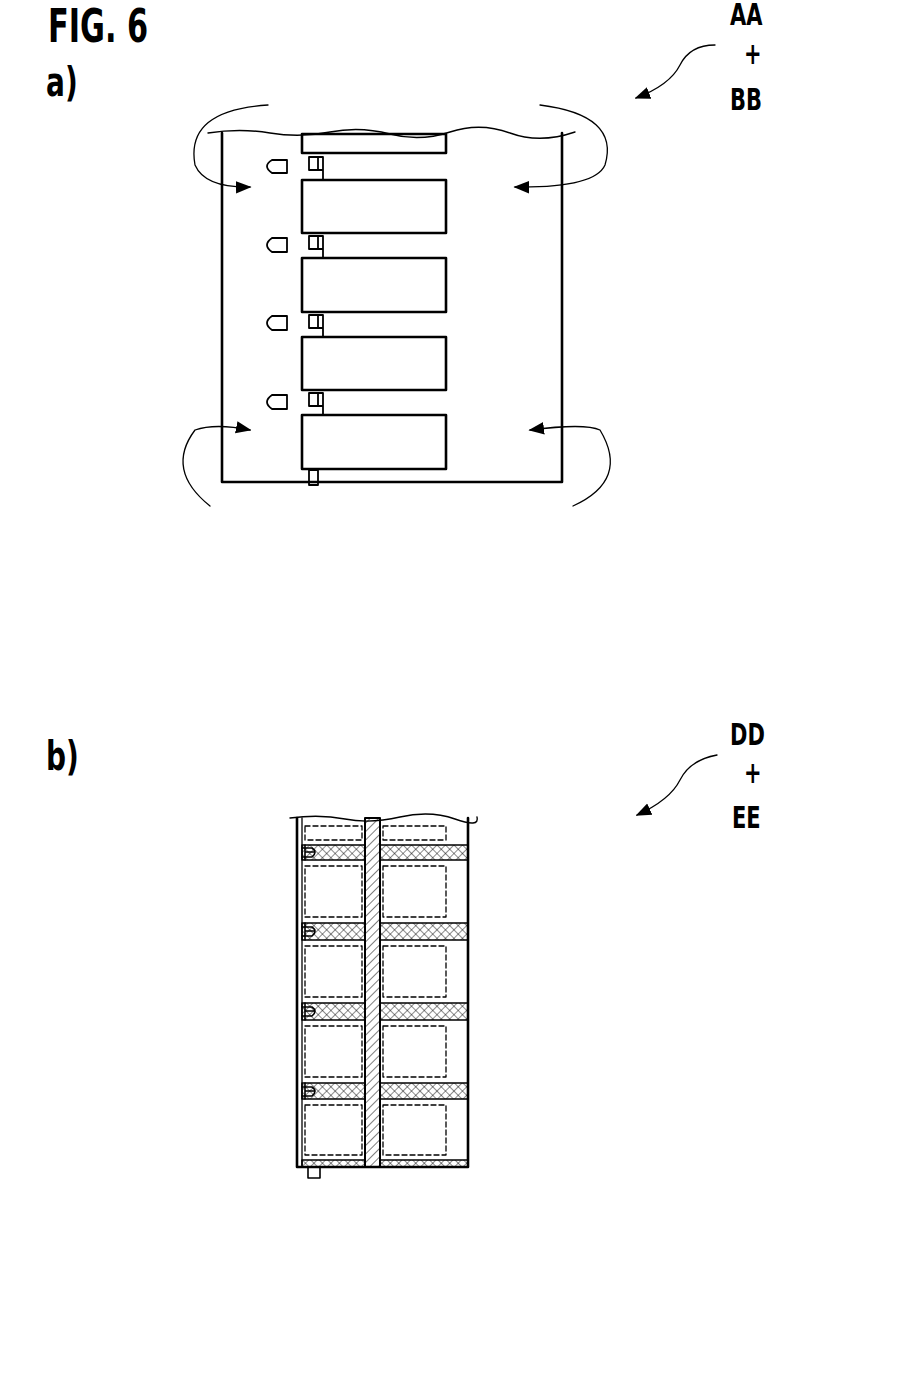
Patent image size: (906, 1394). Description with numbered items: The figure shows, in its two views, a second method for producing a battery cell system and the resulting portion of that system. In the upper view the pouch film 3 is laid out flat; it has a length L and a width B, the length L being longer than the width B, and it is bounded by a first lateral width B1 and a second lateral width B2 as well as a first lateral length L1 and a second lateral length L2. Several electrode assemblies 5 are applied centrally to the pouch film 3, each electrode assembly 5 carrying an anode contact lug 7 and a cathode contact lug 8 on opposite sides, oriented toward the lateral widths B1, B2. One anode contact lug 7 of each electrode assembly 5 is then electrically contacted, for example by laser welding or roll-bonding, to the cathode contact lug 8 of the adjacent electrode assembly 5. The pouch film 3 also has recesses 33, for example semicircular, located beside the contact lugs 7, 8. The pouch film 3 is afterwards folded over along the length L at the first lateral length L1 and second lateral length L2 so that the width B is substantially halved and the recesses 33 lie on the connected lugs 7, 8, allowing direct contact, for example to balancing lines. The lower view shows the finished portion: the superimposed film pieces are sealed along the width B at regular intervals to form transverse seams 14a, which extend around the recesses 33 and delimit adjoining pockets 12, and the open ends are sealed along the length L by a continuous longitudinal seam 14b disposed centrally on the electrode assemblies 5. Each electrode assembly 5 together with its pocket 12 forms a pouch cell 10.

The pouch film 3 is at (258, 150).
The electrode assembly 5 is at (420, 192).
The anode contact lug 7 is at (308, 240).
The cathode contact lug 8 is at (315, 168).
The pouch cell 10 is at (290, 1040).
The pocket 12 is at (423, 882).
The transverse seam 14a is at (468, 1007).
The longitudinal seam 14b is at (372, 830).
The recess 33 is at (268, 246).
The width B is at (222, 490).
The first lateral width B1 is at (378, 133).
The second lateral width B2 is at (480, 484).
The length L is at (626, 492).
The first lateral length L1 is at (222, 305).
The second lateral length L2 is at (562, 322).